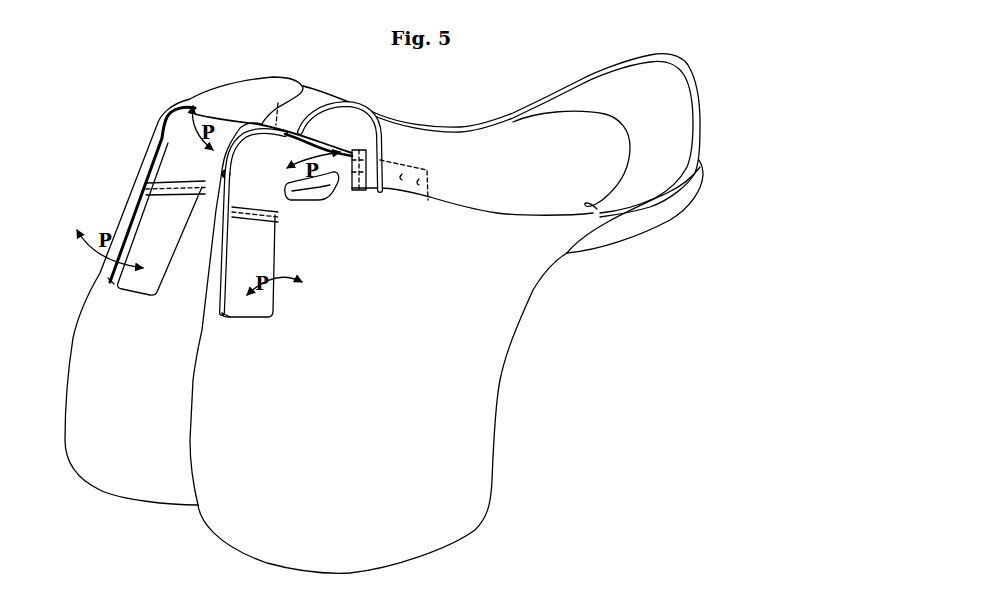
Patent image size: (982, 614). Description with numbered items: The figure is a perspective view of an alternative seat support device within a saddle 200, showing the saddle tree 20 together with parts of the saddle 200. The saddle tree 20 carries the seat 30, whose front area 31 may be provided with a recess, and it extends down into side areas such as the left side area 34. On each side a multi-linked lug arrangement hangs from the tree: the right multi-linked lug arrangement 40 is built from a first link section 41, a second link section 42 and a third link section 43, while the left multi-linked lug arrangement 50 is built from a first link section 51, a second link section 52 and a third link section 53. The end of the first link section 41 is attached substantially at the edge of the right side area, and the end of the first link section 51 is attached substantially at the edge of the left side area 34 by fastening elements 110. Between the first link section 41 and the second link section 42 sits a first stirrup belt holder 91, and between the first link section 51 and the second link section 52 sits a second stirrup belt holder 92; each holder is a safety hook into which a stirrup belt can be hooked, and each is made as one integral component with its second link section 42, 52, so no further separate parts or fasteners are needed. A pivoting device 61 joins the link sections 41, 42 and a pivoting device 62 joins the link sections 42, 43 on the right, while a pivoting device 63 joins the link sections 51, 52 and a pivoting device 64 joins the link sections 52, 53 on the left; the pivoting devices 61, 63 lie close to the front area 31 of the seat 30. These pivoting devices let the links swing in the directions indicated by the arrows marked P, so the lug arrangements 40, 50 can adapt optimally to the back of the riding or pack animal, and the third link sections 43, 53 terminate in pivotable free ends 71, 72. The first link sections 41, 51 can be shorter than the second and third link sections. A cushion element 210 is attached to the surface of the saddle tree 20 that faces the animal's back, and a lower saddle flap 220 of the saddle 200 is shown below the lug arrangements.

The saddle tree 20 is at (276, 46).
The seat 30 is at (501, 151).
The front area of the seat 31 is at (357, 108).
The left side area 34 is at (462, 212).
The right multi-linked lug arrangement 40 is at (132, 188).
The first link section of the right multi-linked lug arrangement 41 is at (300, 126).
The second link section of the right multi-linked lug arrangement 42 is at (181, 116).
The third link section of the right multi-linked lug arrangement 43 is at (124, 224).
The left multi-linked lug arrangement 50 is at (305, 220).
The first link section of the left multi-linked lug arrangement 51 is at (380, 156).
The second link section of the left multi-linked lug arrangement 52 is at (308, 142).
The third link section of the left multi-linked lug arrangement 53 is at (264, 268).
The pivoting device 61 is at (262, 126).
The pivoting device 62 is at (140, 187).
The pivoting device 63 is at (358, 190).
The pivoting device 64 is at (286, 217).
The pivotable free end 71 is at (103, 274).
The pivotable free end 72 is at (264, 310).
The first stirrup belt holder 91 is at (204, 181).
The second stirrup belt holder 92 is at (288, 196).
The fastening elements 110 is at (420, 178).
The saddle 200 is at (377, 325).
The cushion element 210 is at (634, 240).
The lower saddle flap 220 is at (80, 448).